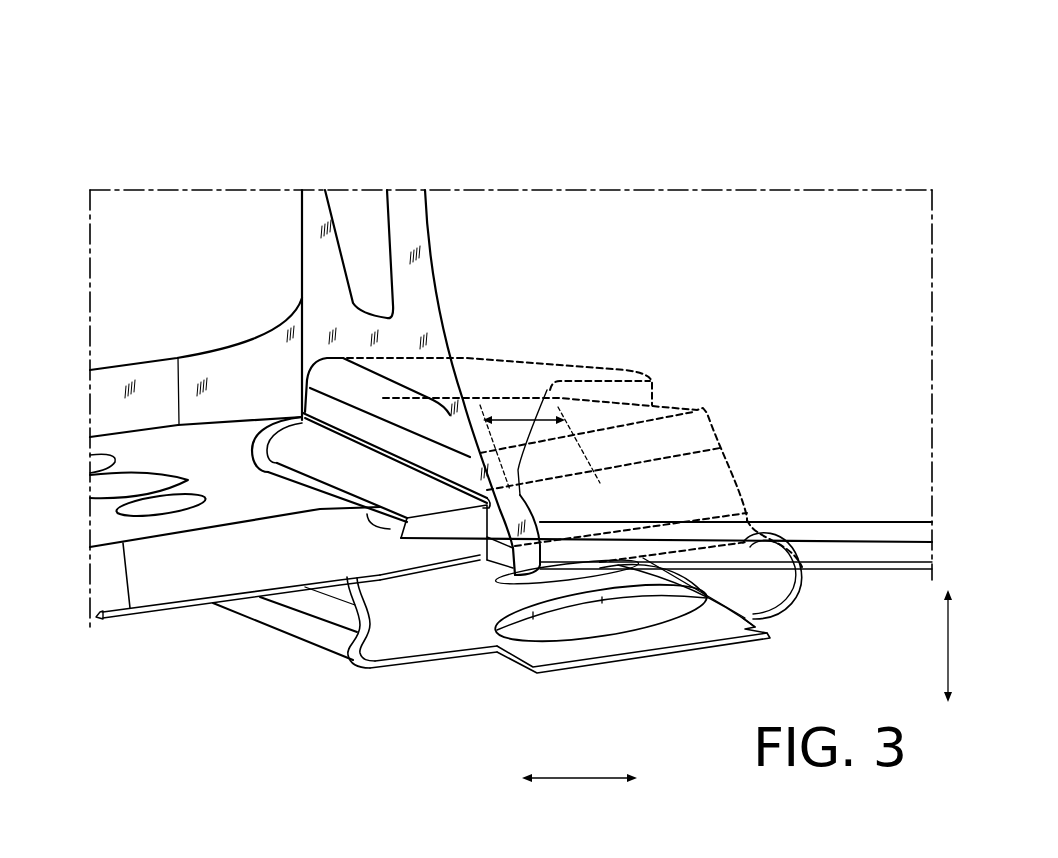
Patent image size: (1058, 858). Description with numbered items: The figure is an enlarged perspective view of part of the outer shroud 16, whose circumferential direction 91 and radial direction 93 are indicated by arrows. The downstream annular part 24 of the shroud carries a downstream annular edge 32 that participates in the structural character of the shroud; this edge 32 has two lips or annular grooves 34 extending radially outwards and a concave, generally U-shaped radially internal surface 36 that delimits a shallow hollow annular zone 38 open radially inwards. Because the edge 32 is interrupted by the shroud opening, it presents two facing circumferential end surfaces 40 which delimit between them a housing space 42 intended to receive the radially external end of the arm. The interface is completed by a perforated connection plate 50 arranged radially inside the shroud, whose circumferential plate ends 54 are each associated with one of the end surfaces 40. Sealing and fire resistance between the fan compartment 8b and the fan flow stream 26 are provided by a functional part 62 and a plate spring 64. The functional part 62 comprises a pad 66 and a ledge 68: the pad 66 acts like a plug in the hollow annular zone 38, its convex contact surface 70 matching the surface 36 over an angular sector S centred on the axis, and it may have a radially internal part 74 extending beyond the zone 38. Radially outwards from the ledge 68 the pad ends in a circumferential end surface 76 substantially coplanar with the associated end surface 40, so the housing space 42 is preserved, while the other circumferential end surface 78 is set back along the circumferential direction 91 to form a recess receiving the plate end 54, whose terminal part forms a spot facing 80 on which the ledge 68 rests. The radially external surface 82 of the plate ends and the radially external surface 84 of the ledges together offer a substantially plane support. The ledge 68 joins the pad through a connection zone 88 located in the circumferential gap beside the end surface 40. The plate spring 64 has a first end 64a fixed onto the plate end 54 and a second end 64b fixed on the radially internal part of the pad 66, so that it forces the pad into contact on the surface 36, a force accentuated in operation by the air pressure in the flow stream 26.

The fan compartment 8b is at (157, 169).
The outer shroud 16 is at (776, 160).
The downstream annular part 24 is at (936, 282).
The fan flow stream 26 is at (753, 684).
The downstream annular edge 32 is at (616, 196).
The lips or annular grooves 34 is at (318, 212).
The radially internal surface 36 is at (302, 375).
The hollow annular zone 38 is at (394, 420).
The circumferential end surfaces 40 is at (367, 327).
The housing space 42 is at (203, 485).
The perforated connection plate 50 is at (165, 592).
The circumferential plate ends 54 is at (241, 572).
The functional air sealing and fire resistance part 62 is at (472, 525).
The plate spring 64 is at (357, 680).
The first end 64a is at (132, 620).
The second end 64b is at (743, 547).
The pad 66 is at (437, 430).
The ledge 68 is at (420, 537).
The contact surface 70 is at (380, 380).
The radially internal part 74 is at (519, 571).
The circumferential end surface 76 is at (387, 400).
The circumferential end surface 78 is at (497, 560).
The spot facing 80 is at (348, 576).
The radially external surface 82 is at (183, 457).
The radially external surface 84 is at (297, 448).
The connection zone 88 is at (480, 567).
The circumferential direction 91 is at (580, 778).
The radial direction 93 is at (948, 648).
The angular sector S is at (547, 388).